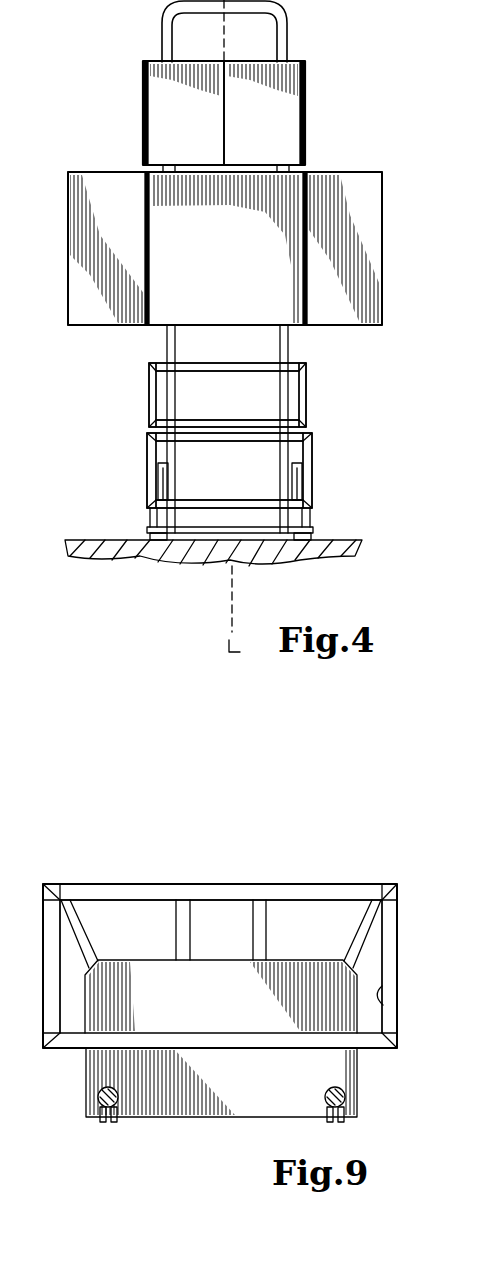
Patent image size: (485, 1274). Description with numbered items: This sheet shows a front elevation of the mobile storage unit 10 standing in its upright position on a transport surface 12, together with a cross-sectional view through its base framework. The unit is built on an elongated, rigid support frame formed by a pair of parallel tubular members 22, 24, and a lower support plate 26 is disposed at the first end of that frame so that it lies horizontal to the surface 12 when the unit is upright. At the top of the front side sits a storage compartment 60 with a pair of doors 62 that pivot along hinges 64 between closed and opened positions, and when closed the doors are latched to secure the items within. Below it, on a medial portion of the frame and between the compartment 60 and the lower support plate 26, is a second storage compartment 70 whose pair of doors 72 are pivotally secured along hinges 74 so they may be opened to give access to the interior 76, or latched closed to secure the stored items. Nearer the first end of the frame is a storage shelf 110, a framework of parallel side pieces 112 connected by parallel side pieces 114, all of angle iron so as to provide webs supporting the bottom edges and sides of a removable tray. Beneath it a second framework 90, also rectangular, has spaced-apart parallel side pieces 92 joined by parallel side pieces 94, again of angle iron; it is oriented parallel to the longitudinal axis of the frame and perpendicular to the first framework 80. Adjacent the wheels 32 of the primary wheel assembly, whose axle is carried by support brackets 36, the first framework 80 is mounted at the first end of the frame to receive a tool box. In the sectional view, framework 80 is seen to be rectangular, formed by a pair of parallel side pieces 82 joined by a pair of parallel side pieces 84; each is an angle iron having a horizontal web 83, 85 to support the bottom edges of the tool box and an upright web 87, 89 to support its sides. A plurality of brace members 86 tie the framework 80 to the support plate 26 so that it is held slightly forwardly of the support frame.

In FIG. 4, the mobile storage unit 10 is at (113, 129).
In FIG. 4, the transport surface 12 is at (118, 540).
In FIG. 4, the tubular member 22 is at (166, 343).
In FIG. 9, the tubular member 22 is at (346, 1097).
In FIG. 4, the tubular member 24 is at (290, 343).
In FIG. 9, the tubular member 24 is at (96, 1095).
In FIG. 4, the lower support plate 26 is at (212, 545).
In FIG. 9, the lower support plate 26 is at (218, 994).
In FIG. 4, the rotatable wheel 32 is at (163, 483).
In FIG. 9, the support bracket 36 is at (113, 1122).
In FIG. 4, the storage compartment 60 is at (305, 95).
In FIG. 4, the door 62 is at (191, 126).
In FIG. 4, the hinge 64 is at (143, 80).
In FIG. 4, the second storage compartment 70 is at (305, 172).
In FIG. 4, the door 72 is at (124, 211).
In FIG. 4, the hinge 74 is at (145, 278).
In FIG. 4, the interior 76 is at (215, 261).
In FIG. 4, the first framework 80 is at (313, 520).
In FIG. 9, the first framework 80 is at (398, 905).
In FIG. 9, the side piece 82 is at (298, 895).
In FIG. 9, the horizontal web 83 is at (133, 896).
In FIG. 9, the side piece 84 is at (385, 960).
In FIG. 9, the horizontal web 85 is at (48, 960).
In FIG. 9, the brace member 86 is at (80, 930).
In FIG. 9, the upright web 87 is at (165, 883).
In FIG. 9, the upright web 89 is at (207, 1050).
In FIG. 4, the second framework 90 is at (312, 448).
In FIG. 4, the side piece 92 is at (193, 437).
In FIG. 4, the side piece 94 is at (152, 455).
In FIG. 4, the storage shelf 110 is at (318, 378).
In FIG. 4, the side piece 112 is at (152, 390).
In FIG. 4, the side piece 114 is at (187, 362).